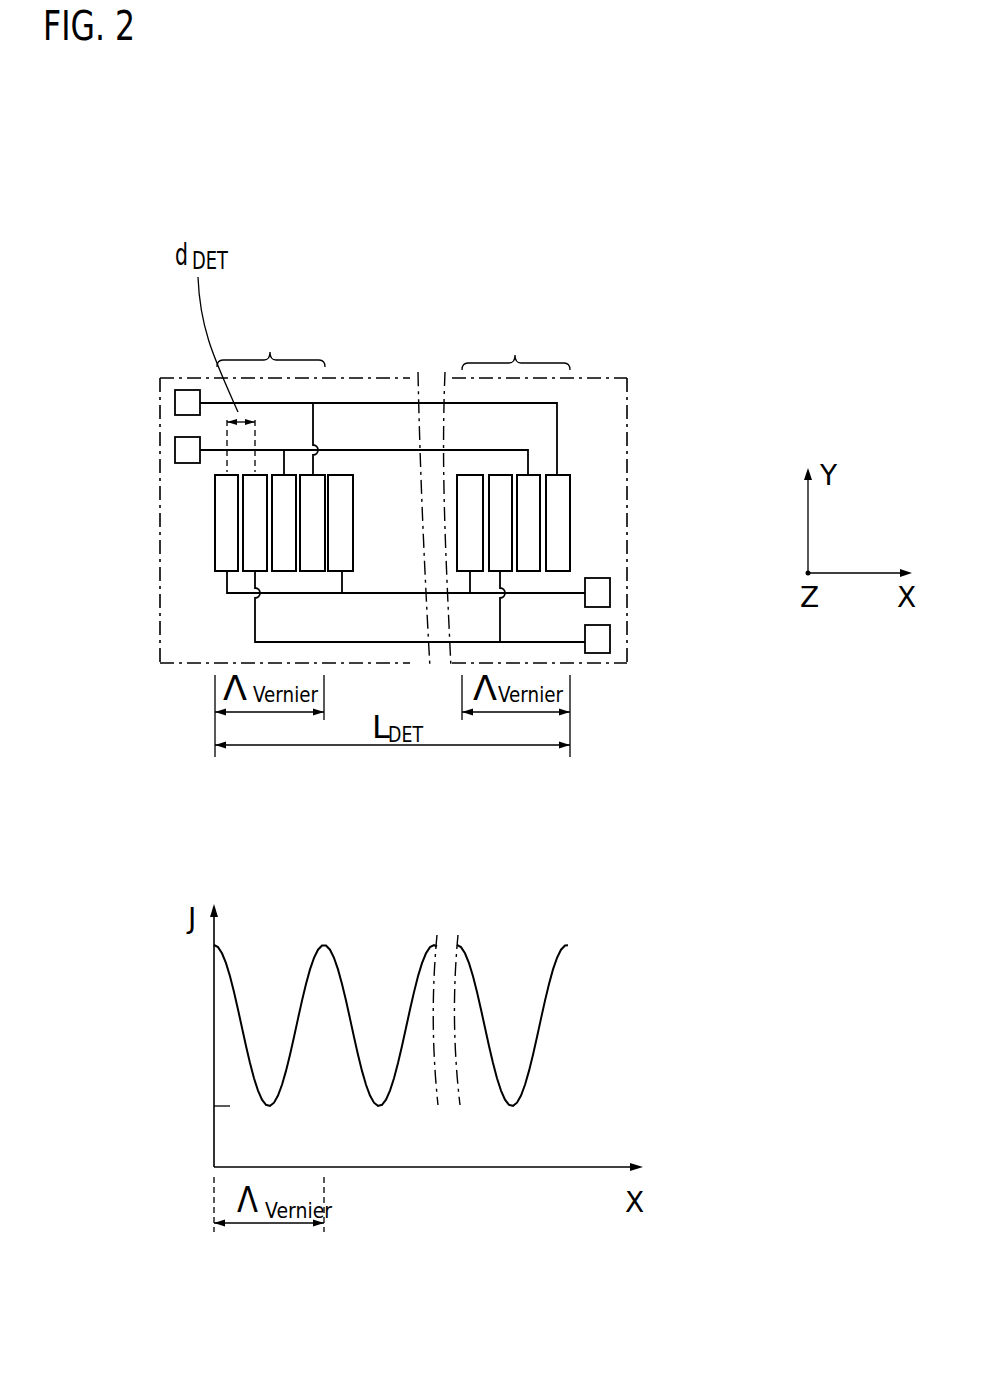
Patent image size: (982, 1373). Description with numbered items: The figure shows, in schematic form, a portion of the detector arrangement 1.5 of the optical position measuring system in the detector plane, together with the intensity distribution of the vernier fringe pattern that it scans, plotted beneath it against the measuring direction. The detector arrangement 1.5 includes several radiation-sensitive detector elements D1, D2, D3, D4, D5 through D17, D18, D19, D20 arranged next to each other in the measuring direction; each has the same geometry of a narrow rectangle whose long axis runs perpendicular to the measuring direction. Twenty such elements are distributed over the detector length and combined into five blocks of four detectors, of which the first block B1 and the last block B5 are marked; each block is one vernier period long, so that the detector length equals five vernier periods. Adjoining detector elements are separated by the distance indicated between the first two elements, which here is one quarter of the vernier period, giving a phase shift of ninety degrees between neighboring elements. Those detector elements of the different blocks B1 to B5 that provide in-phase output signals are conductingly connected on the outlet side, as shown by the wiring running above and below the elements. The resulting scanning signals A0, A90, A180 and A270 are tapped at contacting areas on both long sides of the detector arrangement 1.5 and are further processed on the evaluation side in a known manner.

The detector arrangement 1.5 is at (603, 553).
The detector element D1 is at (228, 557).
The detector element D2 is at (255, 533).
The detector element D3 is at (287, 517).
The detector element D4 is at (313, 492).
The detector element D5 is at (342, 497).
The detector element D17 is at (473, 487).
The detector element D18 is at (502, 480).
The detector element D19 is at (528, 488).
The detector element D20 is at (558, 515).
The block B1 is at (271, 334).
The block B5 is at (516, 335).
The scanning signal A0 is at (605, 590).
The scanning signal A90 is at (605, 645).
The scanning signal A180 is at (187, 453).
The scanning signal A270 is at (187, 403).